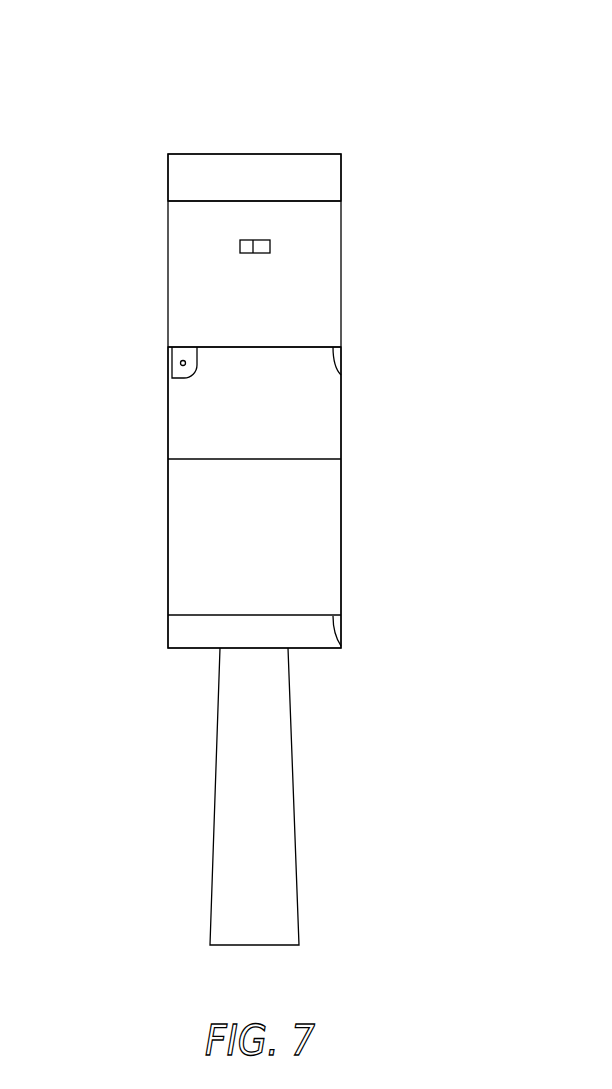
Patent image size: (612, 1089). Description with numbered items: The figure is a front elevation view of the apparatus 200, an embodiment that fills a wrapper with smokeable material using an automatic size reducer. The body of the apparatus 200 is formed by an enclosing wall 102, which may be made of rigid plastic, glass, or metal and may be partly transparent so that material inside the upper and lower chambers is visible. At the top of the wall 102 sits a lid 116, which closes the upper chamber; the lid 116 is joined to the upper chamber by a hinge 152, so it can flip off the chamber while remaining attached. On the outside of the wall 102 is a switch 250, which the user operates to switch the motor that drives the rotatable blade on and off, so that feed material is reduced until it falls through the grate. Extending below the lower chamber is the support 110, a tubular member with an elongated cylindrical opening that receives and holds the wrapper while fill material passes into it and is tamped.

The apparatus 200 is at (340, 107).
The lid 116 is at (180, 153).
The switch 250 is at (240, 246).
The hinge 152 is at (178, 363).
The wall 102 is at (341, 376).
The support 110 is at (293, 795).